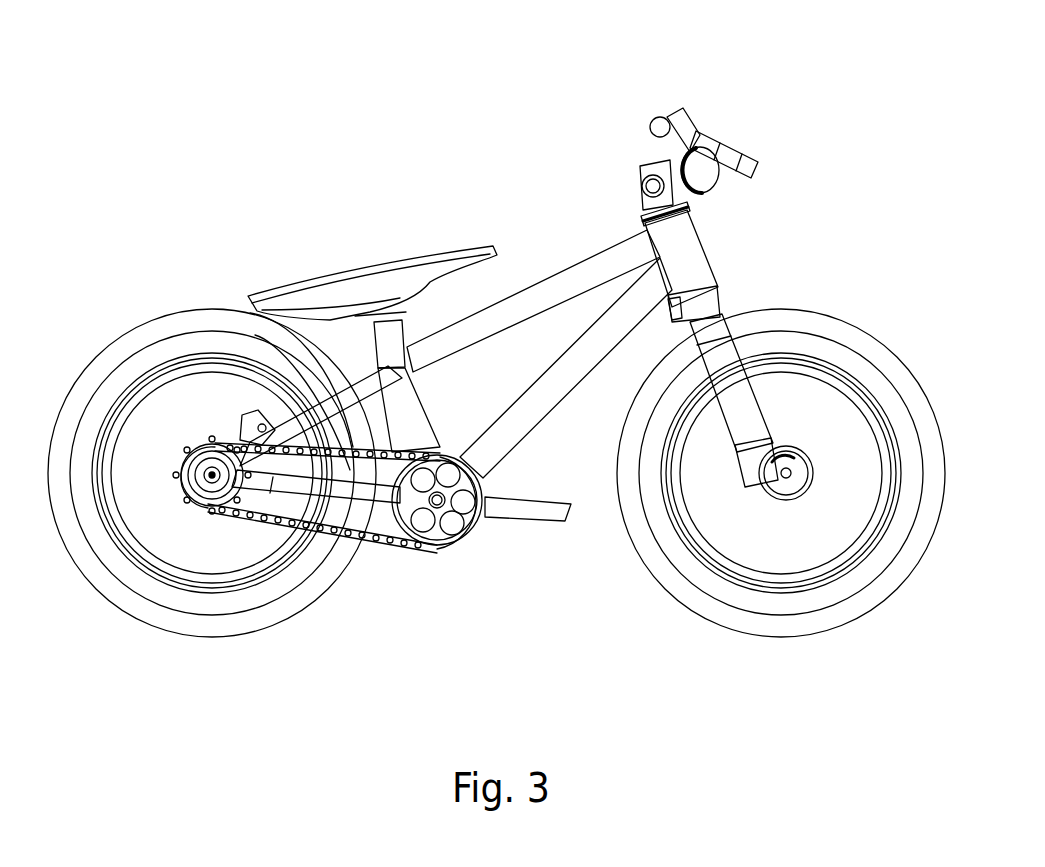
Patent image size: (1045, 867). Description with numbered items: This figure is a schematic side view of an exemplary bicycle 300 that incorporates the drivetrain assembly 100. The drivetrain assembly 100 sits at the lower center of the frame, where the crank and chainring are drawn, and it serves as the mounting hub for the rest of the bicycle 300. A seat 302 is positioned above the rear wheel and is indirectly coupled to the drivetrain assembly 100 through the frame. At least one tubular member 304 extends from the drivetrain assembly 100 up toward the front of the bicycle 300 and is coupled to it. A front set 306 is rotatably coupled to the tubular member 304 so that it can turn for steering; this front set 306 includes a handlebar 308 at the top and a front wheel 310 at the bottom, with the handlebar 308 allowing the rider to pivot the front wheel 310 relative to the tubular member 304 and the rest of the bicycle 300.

The bicycle 300 is at (155, 63).
The seat 302 is at (385, 266).
The tubular member 304 is at (678, 233).
The front set 306 is at (726, 294).
The handlebar 308 is at (695, 133).
The front wheel 310 is at (830, 318).
The drivetrain assembly 100 is at (466, 558).